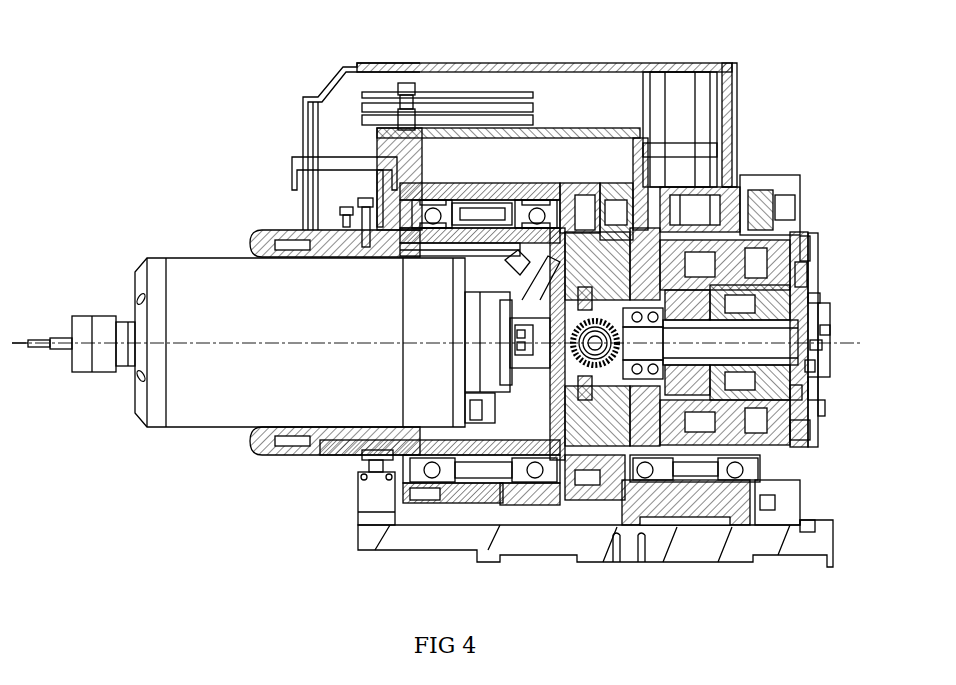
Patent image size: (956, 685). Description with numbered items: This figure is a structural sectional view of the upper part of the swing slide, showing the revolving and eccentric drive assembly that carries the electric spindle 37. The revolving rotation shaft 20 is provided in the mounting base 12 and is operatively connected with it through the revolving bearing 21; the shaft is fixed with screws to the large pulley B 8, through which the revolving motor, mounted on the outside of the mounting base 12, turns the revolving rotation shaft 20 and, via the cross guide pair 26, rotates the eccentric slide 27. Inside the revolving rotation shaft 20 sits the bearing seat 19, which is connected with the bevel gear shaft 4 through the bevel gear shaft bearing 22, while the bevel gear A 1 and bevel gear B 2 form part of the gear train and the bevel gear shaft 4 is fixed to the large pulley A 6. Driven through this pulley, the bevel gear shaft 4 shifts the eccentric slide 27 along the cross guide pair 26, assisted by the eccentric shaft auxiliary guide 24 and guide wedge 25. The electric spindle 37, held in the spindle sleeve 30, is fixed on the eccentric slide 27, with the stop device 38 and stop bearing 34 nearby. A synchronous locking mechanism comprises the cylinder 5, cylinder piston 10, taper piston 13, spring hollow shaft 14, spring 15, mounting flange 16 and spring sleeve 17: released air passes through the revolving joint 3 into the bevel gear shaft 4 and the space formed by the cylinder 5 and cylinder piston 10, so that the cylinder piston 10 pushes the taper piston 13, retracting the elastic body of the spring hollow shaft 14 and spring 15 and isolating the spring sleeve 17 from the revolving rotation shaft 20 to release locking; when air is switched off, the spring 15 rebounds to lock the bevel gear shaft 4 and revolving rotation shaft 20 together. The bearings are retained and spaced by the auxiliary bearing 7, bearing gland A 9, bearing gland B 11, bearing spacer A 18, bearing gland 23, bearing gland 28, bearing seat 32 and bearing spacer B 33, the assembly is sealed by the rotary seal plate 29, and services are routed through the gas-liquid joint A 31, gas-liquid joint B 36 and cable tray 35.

The bevel gear A 1 is at (793, 463).
The bevel gear B 2 is at (808, 442).
The revolving joint 3 is at (812, 375).
The bevel gear shaft 4 is at (815, 372).
The cylinder 5 is at (807, 373).
The large pulley A 6 is at (830, 352).
The auxiliary bearing 7 is at (835, 328).
The large pulley B 8 is at (822, 300).
The bearing gland A 9 is at (795, 232).
The cylinder piston 10 is at (785, 222).
The bearing gland B 11 is at (790, 213).
The mounting base 12 is at (780, 213).
The taper piston 13 is at (773, 207).
The spring hollow shaft 14 is at (757, 187).
The spring 15 is at (733, 187).
The mounting flange 16 is at (717, 200).
The spring sleeve 17 is at (697, 200).
The bearing spacer A 18 is at (683, 200).
The bearing seat 19 is at (650, 205).
The revolving rotation shaft 20 is at (643, 200).
The revolving bearing 21 is at (625, 200).
The bevel gear shaft bearing 22 is at (655, 150).
The bearing gland 23 is at (640, 165).
The eccentric shaft auxiliary guide 24 is at (625, 185).
The guide wedge 25 is at (607, 195).
The cross guide pair 26 is at (590, 195).
The eccentric slide 27 is at (575, 195).
The bearing gland 28 is at (548, 195).
The rotary seal plate 29 is at (525, 205).
The spindle sleeve 30 is at (500, 200).
The gas-liquid joint A 31 is at (455, 200).
The bearing seat 32 is at (470, 192).
The bearing spacer B 33 is at (428, 185).
The stop bearing 34 is at (392, 165).
The cable tray 35 is at (367, 197).
The gas-liquid joint B 36 is at (345, 205).
The electric spindle 37 is at (390, 313).
The stop device 38 is at (377, 497).